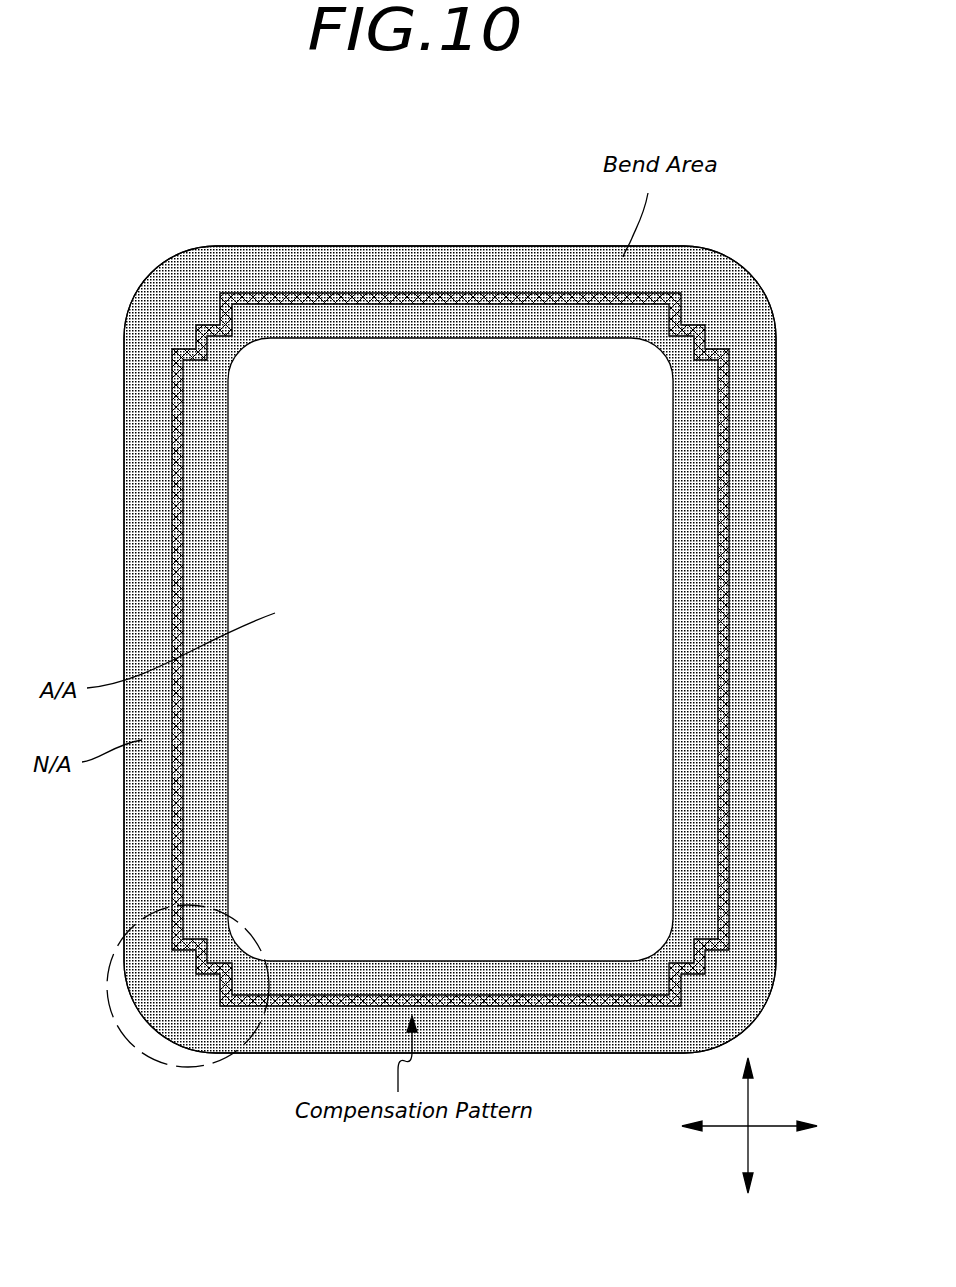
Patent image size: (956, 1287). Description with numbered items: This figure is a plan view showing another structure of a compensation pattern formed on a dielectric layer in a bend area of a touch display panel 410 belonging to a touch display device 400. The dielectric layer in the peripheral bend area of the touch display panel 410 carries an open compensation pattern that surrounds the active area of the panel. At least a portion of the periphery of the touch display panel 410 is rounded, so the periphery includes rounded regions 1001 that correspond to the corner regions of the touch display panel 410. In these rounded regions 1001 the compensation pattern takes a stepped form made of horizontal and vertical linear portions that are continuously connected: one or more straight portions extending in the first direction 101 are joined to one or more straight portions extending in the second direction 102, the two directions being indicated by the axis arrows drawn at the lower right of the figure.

The touch display device 400 is at (160, 159).
The touch display panel 410 is at (130, 361).
The rounded region 1001 is at (126, 1072).
The first direction 101 is at (785, 1126).
The second direction 102 is at (748, 1089).